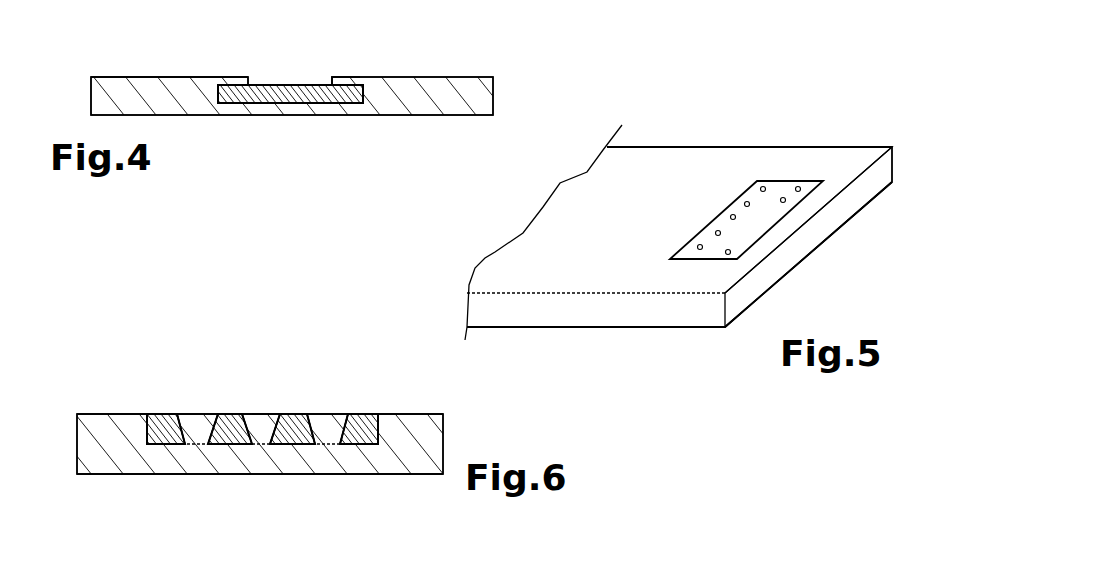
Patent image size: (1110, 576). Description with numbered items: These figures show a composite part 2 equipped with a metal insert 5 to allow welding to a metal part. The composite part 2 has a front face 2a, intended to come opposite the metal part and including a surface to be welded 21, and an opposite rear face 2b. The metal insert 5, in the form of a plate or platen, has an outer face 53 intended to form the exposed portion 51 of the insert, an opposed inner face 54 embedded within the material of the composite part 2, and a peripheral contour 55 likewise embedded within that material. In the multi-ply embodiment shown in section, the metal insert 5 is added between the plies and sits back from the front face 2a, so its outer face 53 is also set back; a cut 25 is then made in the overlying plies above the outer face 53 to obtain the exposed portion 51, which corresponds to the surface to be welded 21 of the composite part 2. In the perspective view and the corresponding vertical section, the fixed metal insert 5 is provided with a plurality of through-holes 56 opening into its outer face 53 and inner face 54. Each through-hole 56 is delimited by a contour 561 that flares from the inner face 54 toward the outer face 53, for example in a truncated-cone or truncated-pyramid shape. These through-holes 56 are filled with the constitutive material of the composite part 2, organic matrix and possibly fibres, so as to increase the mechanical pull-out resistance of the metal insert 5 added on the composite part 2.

In FIG. 4, the composite part 2 is at (193, 88).
In FIG. 6, the composite part 2 is at (397, 427).
In FIG. 5, the composite part 2 is at (497, 305).
In FIG. 4, the front face 2a is at (118, 70).
In FIG. 6, the front face 2a is at (115, 406).
In FIG. 5, the front face 2a is at (645, 170).
In FIG. 6, the rear face 2b is at (109, 484).
In FIG. 5, the rear face 2b is at (638, 337).
In FIG. 4, the metal insert 5 is at (320, 97).
In FIG. 6, the metal insert 5 is at (168, 427).
In FIG. 5, the metal insert 5 is at (713, 251).
In FIG. 4, the surface to be welded 21 is at (290, 42).
In FIG. 4, the cut 25 is at (334, 68).
In FIG. 4, the exposed portion 51 is at (308, 76).
In FIG. 6, the exposed portion 51 is at (233, 406).
In FIG. 5, the exposed portion 51 is at (779, 177).
In FIG. 4, the outer face 53 is at (290, 42).
In FIG. 6, the outer face 53 is at (212, 385).
In FIG. 4, the inner face 54 is at (244, 112).
In FIG. 6, the inner face 54 is at (292, 456).
In FIG. 4, the peripheral contour 55 is at (374, 95).
In FIG. 6, the through-holes 56 is at (262, 437).
In FIG. 5, the through-holes 56 is at (746, 235).
In FIG. 6, the contour 561 is at (323, 423).